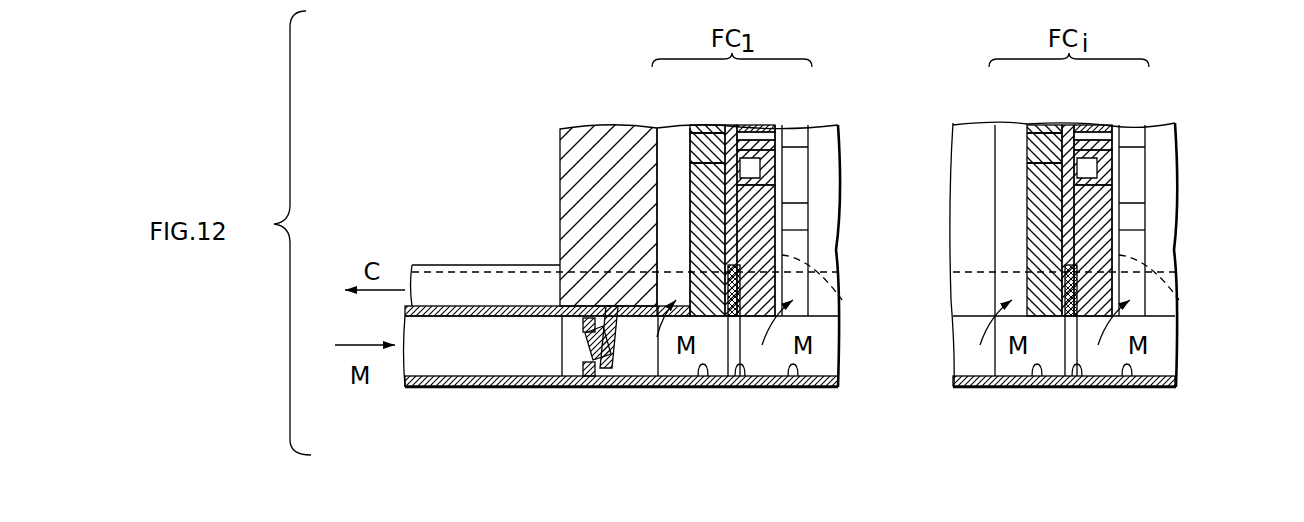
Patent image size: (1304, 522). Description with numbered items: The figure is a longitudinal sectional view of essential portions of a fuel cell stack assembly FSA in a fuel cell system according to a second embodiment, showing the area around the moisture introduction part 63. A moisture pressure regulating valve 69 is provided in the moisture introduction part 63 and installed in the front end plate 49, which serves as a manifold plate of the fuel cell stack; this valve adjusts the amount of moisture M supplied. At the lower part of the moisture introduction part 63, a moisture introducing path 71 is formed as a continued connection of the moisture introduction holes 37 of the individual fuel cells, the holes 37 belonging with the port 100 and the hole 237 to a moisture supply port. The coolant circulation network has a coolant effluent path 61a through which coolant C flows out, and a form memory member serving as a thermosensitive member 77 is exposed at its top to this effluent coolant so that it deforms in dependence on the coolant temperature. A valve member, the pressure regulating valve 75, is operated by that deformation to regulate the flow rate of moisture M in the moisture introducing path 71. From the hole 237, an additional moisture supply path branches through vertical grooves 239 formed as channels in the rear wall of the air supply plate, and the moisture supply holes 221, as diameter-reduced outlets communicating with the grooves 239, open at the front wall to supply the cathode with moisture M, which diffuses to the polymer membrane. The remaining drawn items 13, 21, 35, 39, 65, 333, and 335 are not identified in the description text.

The channel layer 13 is at (752, 125).
The gate structure 21 is at (690, 128).
The substrate layer 35 is at (686, 376).
The moisture introduction hole 37 is at (710, 376).
The dielectric layer 39 is at (672, 128).
The front end plate 49 is at (560, 152).
The coolant effluent path 61a is at (476, 264).
The moisture introduction part 63 is at (621, 388).
The base plate 65 is at (473, 388).
The moisture pressure regulating valve 69 is at (598, 388).
The moisture introducing path 71 is at (841, 355).
The pressure regulating valve 75 is at (584, 338).
The thermosensitive member 77 is at (606, 368).
The moisture supply port 100 is at (746, 376).
The moisture supply hole 221 is at (782, 147).
The hole of moisture supply port 237 is at (795, 376).
The vertical grooves 239 is at (785, 130).
The boundary 333 is at (850, 293).
The cap 335 is at (795, 236).
The fuel cell stack assembly FSA is at (1179, 228).